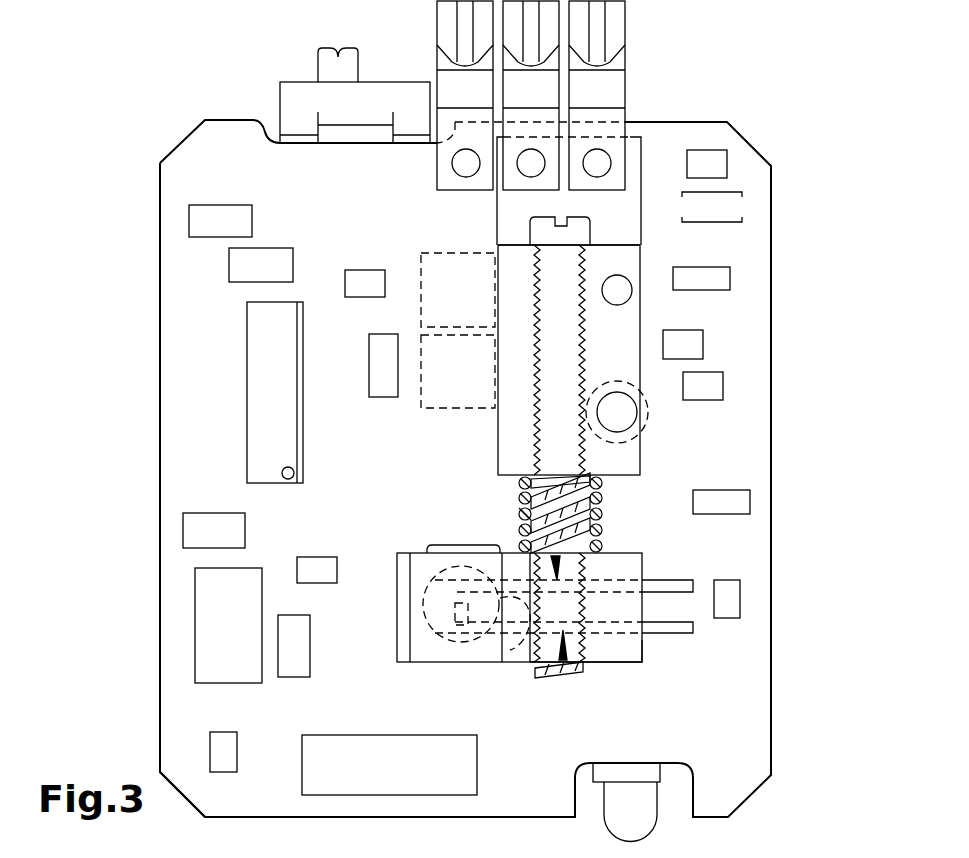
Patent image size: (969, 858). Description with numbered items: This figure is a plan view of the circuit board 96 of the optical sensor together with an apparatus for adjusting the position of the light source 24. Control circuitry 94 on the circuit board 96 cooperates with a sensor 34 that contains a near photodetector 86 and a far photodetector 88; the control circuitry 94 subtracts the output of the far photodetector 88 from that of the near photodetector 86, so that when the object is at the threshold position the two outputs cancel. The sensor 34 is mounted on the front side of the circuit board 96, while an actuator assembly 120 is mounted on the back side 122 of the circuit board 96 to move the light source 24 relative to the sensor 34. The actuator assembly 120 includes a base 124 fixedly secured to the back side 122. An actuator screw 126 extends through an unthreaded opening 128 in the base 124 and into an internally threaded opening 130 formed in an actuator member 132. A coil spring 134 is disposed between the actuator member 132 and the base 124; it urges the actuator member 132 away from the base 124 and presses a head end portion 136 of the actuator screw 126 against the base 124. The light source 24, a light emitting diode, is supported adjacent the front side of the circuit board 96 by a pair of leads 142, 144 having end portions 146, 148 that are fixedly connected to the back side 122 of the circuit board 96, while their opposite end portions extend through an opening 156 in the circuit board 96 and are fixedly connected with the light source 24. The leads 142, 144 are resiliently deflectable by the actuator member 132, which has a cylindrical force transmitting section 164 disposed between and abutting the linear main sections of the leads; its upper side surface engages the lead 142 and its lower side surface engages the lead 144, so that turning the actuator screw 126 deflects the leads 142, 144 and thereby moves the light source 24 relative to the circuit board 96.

The circuit board 96 is at (150, 386).
The back side 122 is at (173, 478).
The control circuitry 94 is at (200, 710).
The sensor 34 is at (420, 327).
The near photodetector 86 is at (421, 300).
The far photodetector 88 is at (421, 393).
The head end portion 136 is at (578, 230).
The unthreaded opening 128 is at (580, 265).
The base 124 is at (608, 322).
The actuator assembly 120 is at (652, 459).
The coil spring 134 is at (607, 491).
The actuator screw 126 is at (607, 537).
The lead 142 is at (522, 514).
The internally threaded opening 130 is at (600, 648).
The actuator member 132 is at (627, 652).
The opening 156 is at (467, 545).
The light source 24 is at (442, 595).
The cylindrical force transmitting section 164 is at (520, 652).
The lead 144 is at (560, 668).
The end portion 146 is at (693, 580).
The end portion 148 is at (693, 632).